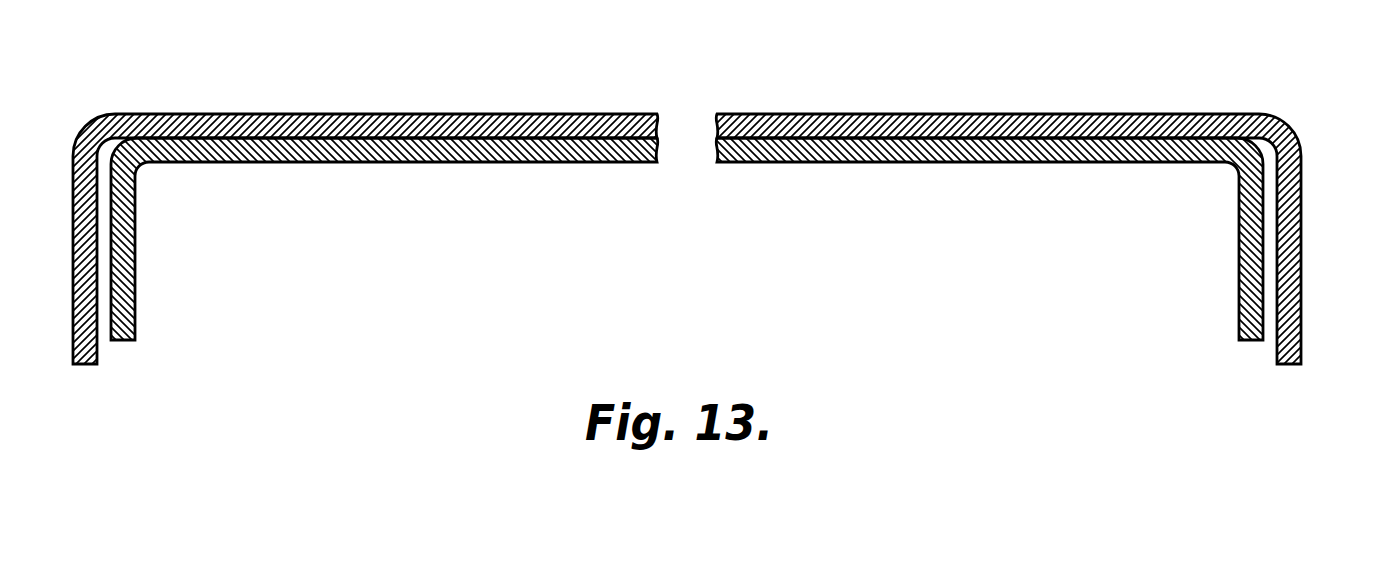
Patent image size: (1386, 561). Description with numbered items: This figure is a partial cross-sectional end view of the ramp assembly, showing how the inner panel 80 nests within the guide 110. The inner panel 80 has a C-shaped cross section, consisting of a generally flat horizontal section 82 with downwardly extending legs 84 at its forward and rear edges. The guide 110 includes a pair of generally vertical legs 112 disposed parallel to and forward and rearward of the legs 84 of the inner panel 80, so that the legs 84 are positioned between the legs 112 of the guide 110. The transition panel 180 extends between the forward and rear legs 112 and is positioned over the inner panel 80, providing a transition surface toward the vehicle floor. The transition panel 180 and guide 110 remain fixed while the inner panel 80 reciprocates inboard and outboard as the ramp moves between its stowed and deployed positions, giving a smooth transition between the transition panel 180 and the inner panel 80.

The inner panel 80 is at (706, 210).
The horizontal section 82 is at (687, 239).
The legs 84 is at (136, 268).
The guide 110 is at (706, 210).
The vertical legs 112 is at (72, 293).
The transition panel 180 is at (893, 113).